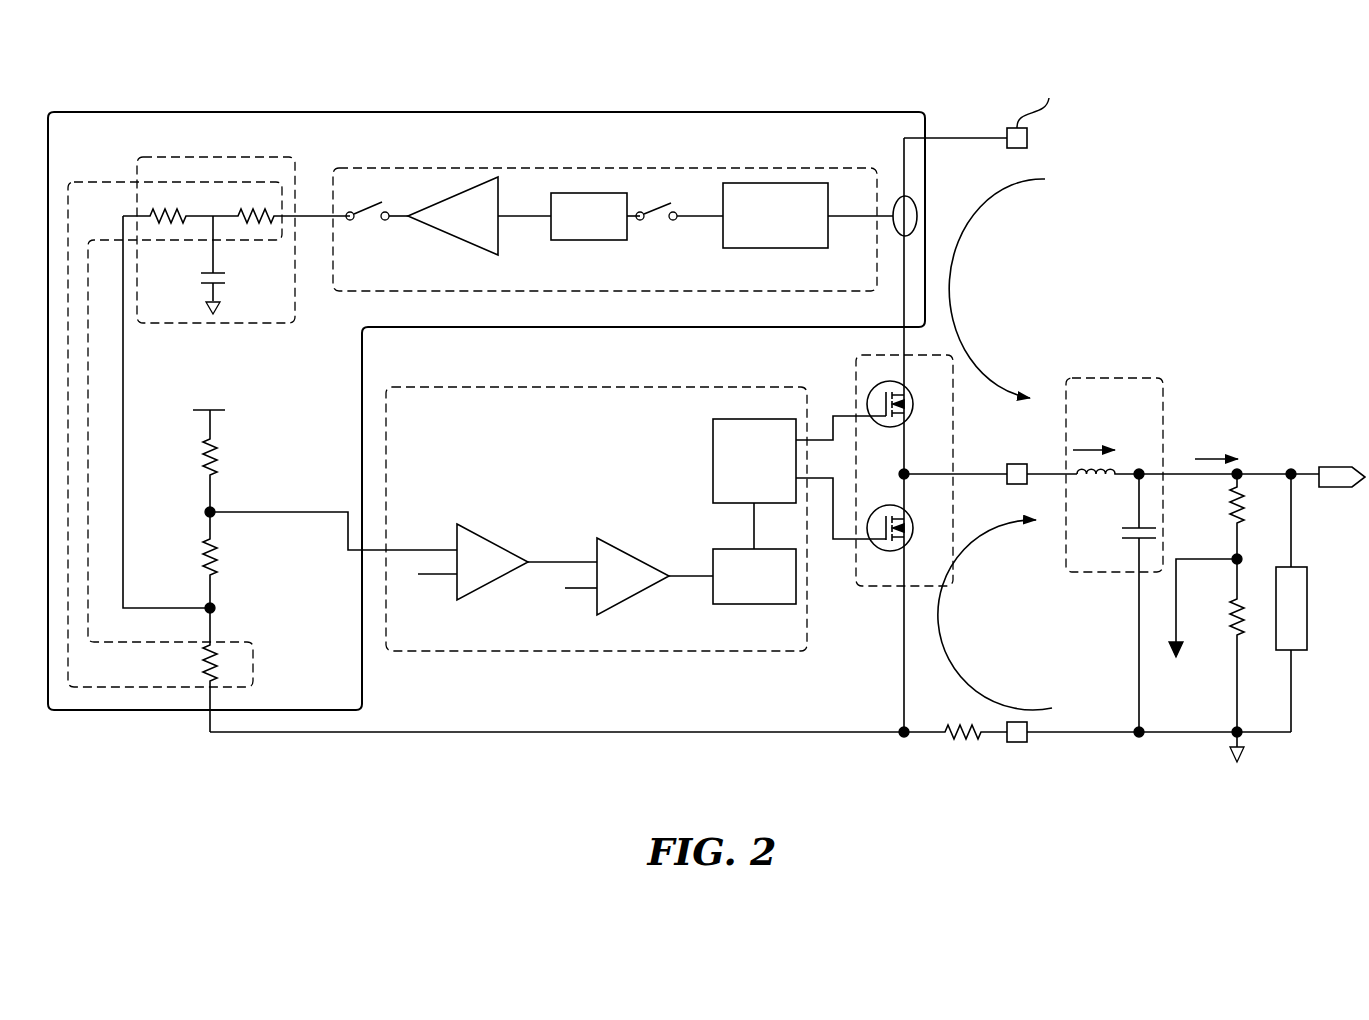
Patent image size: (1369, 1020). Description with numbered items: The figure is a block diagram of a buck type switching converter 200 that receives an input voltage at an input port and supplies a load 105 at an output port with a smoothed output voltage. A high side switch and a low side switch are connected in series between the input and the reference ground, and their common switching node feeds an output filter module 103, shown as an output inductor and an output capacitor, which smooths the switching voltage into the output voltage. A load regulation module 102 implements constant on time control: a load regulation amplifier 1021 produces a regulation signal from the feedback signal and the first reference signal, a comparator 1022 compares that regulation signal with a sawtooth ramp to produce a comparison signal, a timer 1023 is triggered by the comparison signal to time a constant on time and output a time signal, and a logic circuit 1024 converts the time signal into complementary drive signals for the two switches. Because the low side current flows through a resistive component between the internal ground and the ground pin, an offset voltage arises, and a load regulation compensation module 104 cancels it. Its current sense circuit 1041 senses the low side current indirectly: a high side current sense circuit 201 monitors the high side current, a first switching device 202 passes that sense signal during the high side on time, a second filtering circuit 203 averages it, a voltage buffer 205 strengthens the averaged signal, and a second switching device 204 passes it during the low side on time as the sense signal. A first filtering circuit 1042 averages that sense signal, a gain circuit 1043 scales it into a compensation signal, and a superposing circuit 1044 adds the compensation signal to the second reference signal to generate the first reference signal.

The switching converter 200 is at (115, 78).
The load regulation compensation module 104 is at (665, 110).
The first filtering circuit 1042 is at (243, 157).
The gain circuit 1043 is at (208, 457).
The superposing circuit 1044 is at (268, 437).
The current sense circuit 1041 is at (800, 168).
The high side current sense circuit 201 is at (775, 215).
The first switching device 202 is at (660, 216).
The second filtering circuit 203 is at (590, 240).
The second switching device 204 is at (377, 221).
The voltage buffer 205 is at (500, 250).
The load regulation module 102 is at (636, 519).
The load regulation amplifier 1021 is at (465, 598).
The comparator 1022 is at (618, 545).
The timer 1023 is at (754, 576).
The logic circuit 1024 is at (754, 461).
The output filter module 103 is at (1192, 555).
The load 105 is at (1307, 580).